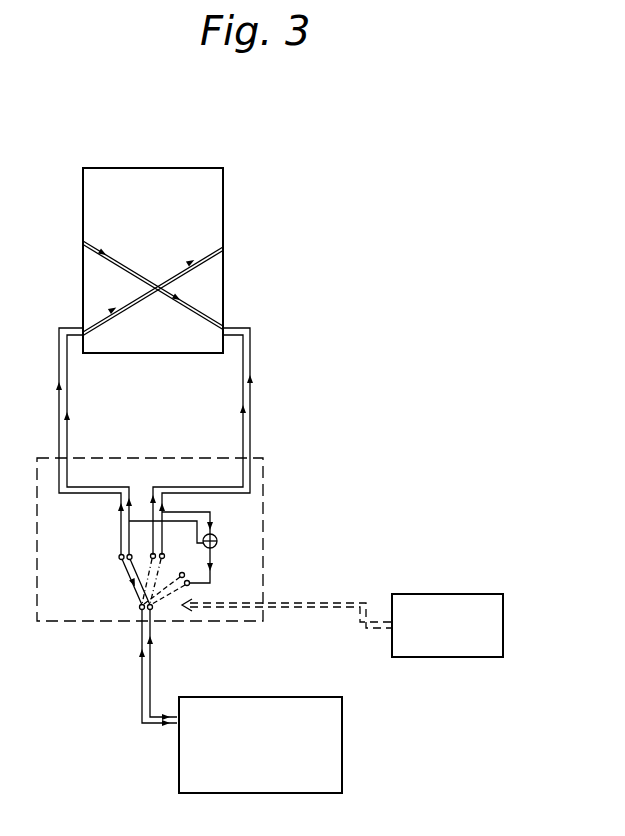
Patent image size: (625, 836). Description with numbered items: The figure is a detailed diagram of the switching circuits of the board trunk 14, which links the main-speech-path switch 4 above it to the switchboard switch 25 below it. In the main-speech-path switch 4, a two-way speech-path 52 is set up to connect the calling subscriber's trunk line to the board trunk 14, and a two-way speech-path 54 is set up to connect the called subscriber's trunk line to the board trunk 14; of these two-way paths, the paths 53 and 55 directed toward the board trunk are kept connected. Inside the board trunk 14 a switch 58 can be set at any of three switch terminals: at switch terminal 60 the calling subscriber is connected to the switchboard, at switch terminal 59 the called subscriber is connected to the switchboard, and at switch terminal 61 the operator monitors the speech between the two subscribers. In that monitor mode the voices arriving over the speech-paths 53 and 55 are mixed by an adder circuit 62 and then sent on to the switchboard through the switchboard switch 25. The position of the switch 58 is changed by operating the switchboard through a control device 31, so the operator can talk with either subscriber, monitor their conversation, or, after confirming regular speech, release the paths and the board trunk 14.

The main-speech-path switch 4 is at (183, 168).
The board trunk 14 is at (263, 530).
The switchboard switch 25 is at (258, 794).
The control device 31 is at (449, 594).
The speech-path 52 is at (107, 253).
The speech-path 53 is at (130, 266).
The speech-path 54 is at (110, 311).
The speech-path 55 is at (130, 303).
The switch 58 is at (133, 582).
The switch terminal 59 is at (119, 556).
The switch terminal 60 is at (164, 553).
The switch terminal 61 is at (190, 583).
The adder circuit 62 is at (217, 537).